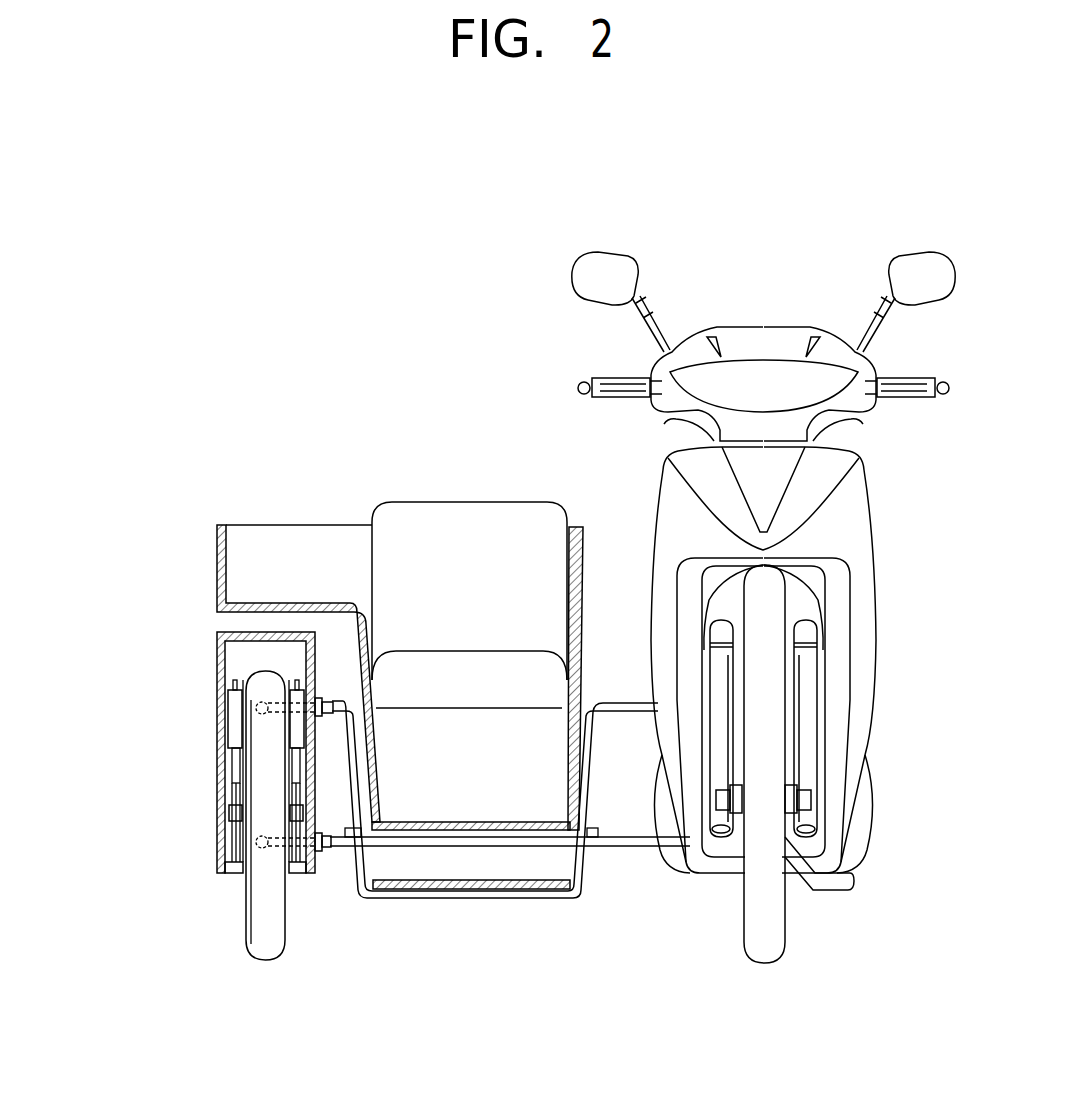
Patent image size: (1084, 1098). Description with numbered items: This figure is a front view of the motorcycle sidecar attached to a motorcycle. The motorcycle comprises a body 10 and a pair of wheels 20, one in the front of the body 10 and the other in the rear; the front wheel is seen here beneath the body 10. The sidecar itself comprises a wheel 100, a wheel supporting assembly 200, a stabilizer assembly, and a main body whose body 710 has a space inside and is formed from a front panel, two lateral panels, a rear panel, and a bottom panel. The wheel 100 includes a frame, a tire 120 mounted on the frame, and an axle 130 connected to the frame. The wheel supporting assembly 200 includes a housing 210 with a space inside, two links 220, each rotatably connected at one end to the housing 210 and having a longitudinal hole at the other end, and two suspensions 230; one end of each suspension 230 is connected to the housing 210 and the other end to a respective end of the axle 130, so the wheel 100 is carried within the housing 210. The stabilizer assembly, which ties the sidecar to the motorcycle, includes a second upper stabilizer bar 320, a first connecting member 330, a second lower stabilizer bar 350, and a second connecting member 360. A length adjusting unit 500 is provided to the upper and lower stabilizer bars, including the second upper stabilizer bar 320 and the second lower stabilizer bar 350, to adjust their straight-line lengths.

The body 10 is at (757, 641).
The wheels 20 is at (791, 955).
The wheel 100 is at (284, 960).
The tire 120 is at (253, 945).
The axle 130 is at (240, 870).
The wheel supporting assembly 200 is at (95, 612).
The housing 210 is at (216, 650).
The links 220 is at (224, 808).
The suspension 230 is at (227, 717).
The second upper stabilizer bar 320 is at (632, 697).
The first connecting member 330 is at (485, 890).
The second lower stabilizer bar 350 is at (626, 852).
The second connecting member 360 is at (440, 830).
The length adjusting unit 500 is at (322, 698).
The body 710 is at (345, 520).